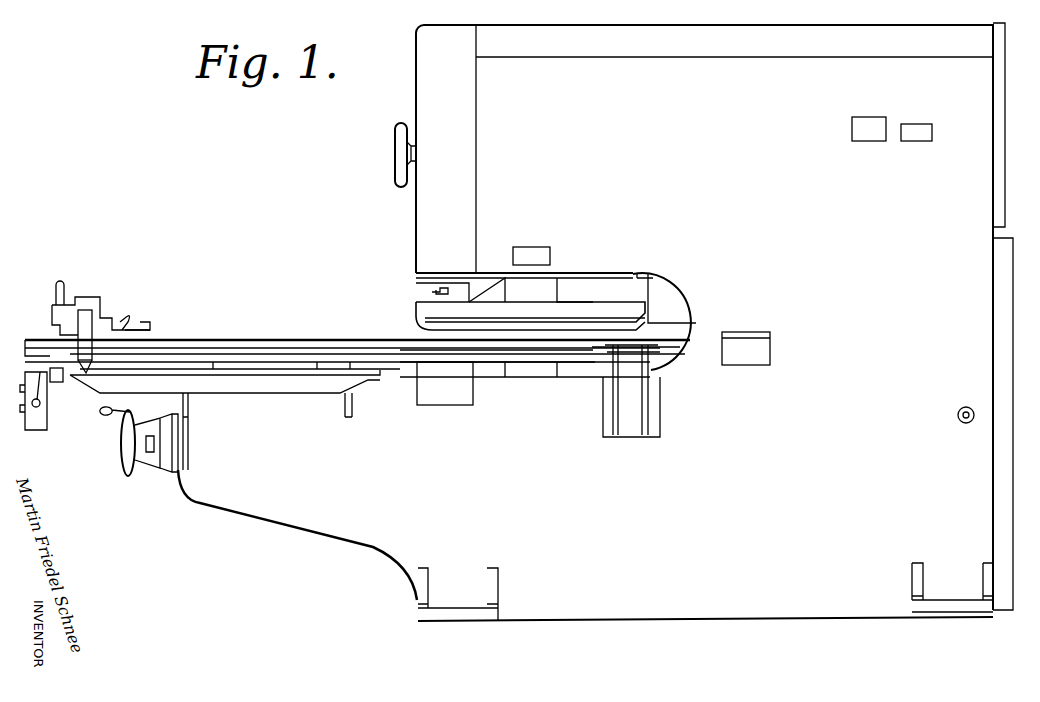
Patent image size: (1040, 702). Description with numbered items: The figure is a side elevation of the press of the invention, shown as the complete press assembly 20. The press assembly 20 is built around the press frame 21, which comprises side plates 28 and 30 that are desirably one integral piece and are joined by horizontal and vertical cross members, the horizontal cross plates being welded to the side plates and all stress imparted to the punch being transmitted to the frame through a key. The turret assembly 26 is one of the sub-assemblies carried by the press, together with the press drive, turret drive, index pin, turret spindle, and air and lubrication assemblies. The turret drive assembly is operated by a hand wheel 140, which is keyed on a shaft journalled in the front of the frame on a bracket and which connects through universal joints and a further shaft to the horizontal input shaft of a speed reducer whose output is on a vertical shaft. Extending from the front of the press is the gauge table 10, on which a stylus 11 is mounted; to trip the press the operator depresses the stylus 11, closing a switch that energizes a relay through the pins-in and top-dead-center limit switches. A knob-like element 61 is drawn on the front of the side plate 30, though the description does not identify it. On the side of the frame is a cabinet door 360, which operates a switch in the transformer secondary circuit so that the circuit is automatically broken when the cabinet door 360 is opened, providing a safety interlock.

The gauge table 10 is at (273, 335).
The stylus 11 is at (60, 290).
The press assembly 20 is at (578, 620).
The press frame 21 is at (397, 568).
The turret assembly 26 is at (403, 325).
The side plate 28 is at (687, 400).
The side plate 30 is at (704, 317).
The knob 61 is at (398, 170).
The hand wheel 140 is at (123, 452).
The cabinet door 360 is at (998, 185).